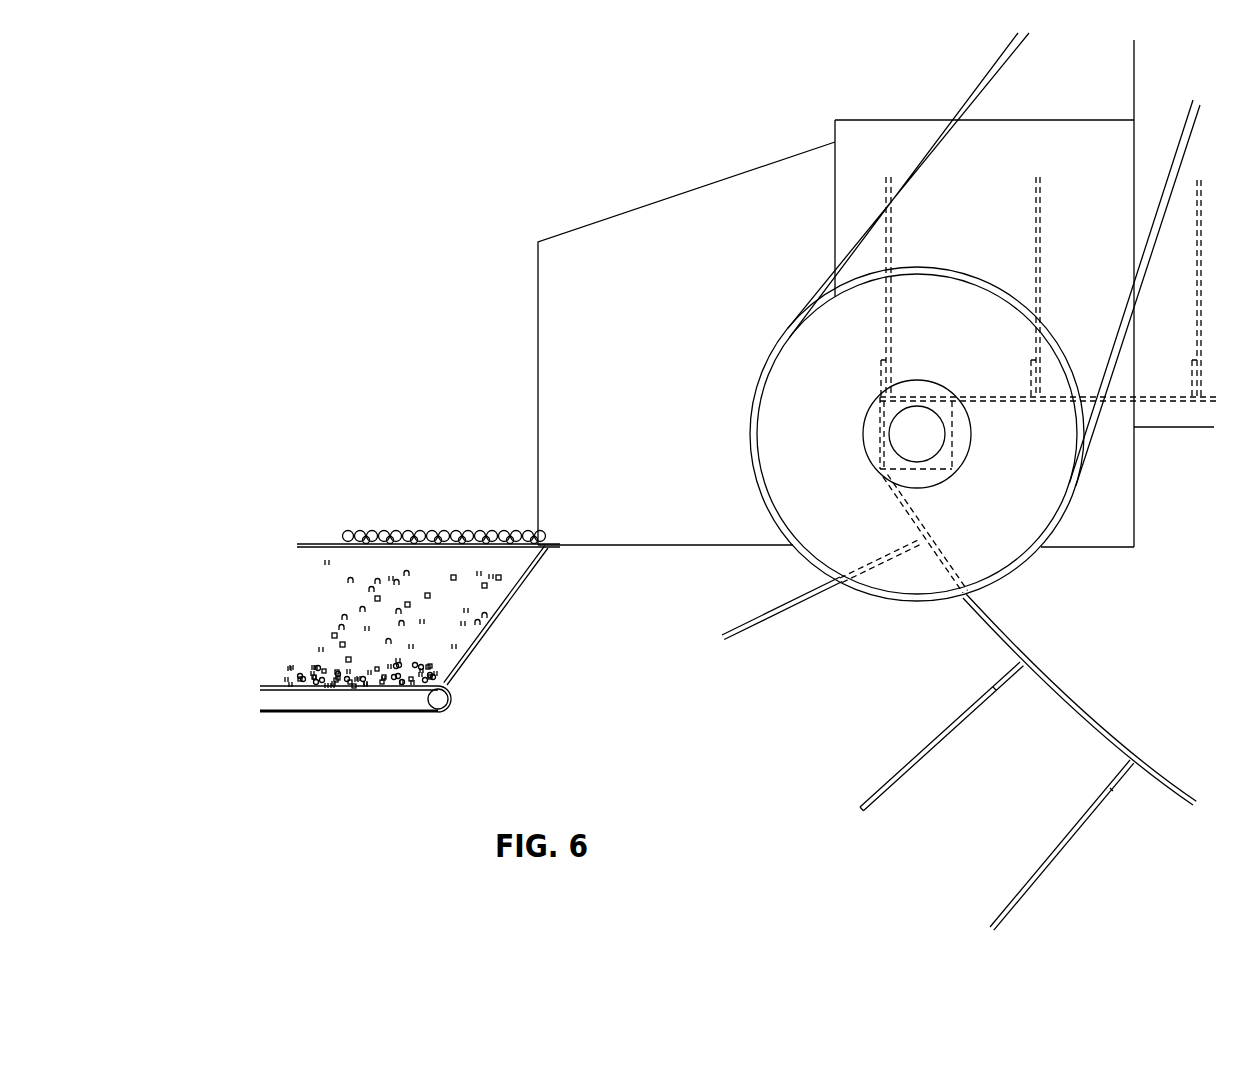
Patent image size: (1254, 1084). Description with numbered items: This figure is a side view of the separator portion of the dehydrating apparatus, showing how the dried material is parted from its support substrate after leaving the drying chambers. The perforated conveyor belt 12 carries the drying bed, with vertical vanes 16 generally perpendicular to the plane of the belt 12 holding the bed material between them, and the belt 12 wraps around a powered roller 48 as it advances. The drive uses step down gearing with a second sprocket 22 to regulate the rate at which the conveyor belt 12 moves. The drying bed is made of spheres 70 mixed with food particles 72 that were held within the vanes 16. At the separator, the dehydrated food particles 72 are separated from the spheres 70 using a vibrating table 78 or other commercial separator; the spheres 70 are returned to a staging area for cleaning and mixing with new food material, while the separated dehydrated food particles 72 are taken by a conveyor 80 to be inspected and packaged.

The conveyor belt 12 is at (988, 395).
The vertical vanes 16 is at (893, 250).
The second sprocket 22 is at (893, 580).
The powered roller 48 is at (898, 432).
The spheres 70 is at (375, 535).
The food particles 72 is at (332, 585).
The vibrating table 78 is at (305, 543).
The conveyor 80 is at (403, 712).